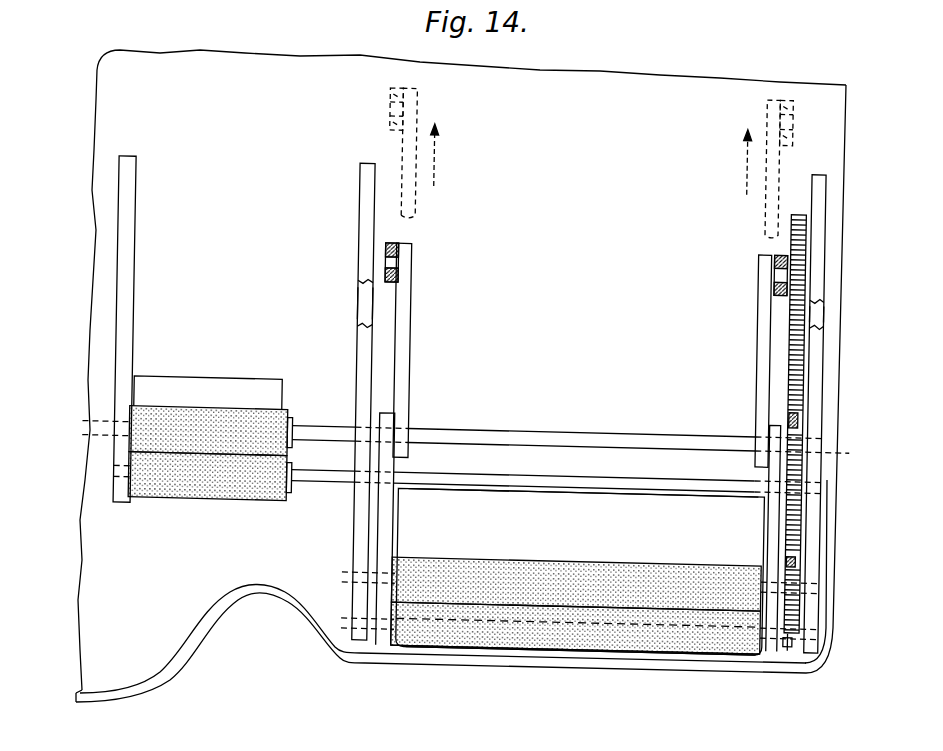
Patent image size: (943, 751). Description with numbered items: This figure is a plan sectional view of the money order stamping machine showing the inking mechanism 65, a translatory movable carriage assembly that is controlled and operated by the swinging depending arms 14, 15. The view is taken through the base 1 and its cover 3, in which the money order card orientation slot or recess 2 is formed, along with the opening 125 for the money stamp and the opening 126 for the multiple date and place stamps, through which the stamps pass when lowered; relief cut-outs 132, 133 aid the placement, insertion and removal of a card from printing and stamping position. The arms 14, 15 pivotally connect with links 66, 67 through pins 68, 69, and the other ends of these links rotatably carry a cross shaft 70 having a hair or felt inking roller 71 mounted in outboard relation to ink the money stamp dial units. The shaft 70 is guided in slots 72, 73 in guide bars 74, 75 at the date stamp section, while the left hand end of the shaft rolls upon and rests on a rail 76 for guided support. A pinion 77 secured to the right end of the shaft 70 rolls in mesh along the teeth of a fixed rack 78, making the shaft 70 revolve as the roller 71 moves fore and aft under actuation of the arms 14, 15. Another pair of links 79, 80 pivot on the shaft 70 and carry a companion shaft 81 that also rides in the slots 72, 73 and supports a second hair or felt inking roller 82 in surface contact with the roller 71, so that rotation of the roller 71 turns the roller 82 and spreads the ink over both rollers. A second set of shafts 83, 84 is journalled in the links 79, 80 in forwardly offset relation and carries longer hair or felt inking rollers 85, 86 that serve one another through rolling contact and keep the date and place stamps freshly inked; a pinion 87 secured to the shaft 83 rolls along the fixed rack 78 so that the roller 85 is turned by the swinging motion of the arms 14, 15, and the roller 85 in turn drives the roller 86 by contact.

The base 1 is at (100, 702).
The money order card orientation slot or recess 2 is at (450, 668).
The cover 3 is at (246, 70).
The depending arm 14 is at (387, 95).
The depending arm 15 is at (784, 100).
The inking mechanism 65 is at (652, 636).
The link 66 is at (410, 352).
The link 67 is at (766, 106).
The pin 68 is at (389, 116).
The pin 69 is at (767, 120).
The cross shaft 70 is at (577, 440).
The hair or felt inking roller 71 is at (290, 408).
The slot 72 is at (358, 303).
The slot 73 is at (812, 318).
The guide bar 74 is at (360, 226).
The guide bar 75 is at (823, 188).
The rail 76 is at (133, 264).
The pinion 77 is at (793, 426).
The fixed rack 78 is at (794, 368).
The link 79 is at (388, 524).
The link 80 is at (772, 514).
The companion shaft 81 is at (480, 492).
The hair or felt inking roller 82 is at (200, 500).
The shaft 83 is at (372, 572).
The shaft 84 is at (786, 648).
The hair or felt inking roller 85 is at (530, 566).
The hair or felt inking roller 86 is at (522, 655).
The pinion 87 is at (787, 558).
The opening 125 is at (185, 380).
The opening 126 is at (622, 492).
The relief cut-out 132 is at (340, 648).
The relief cut-out 133 is at (183, 645).